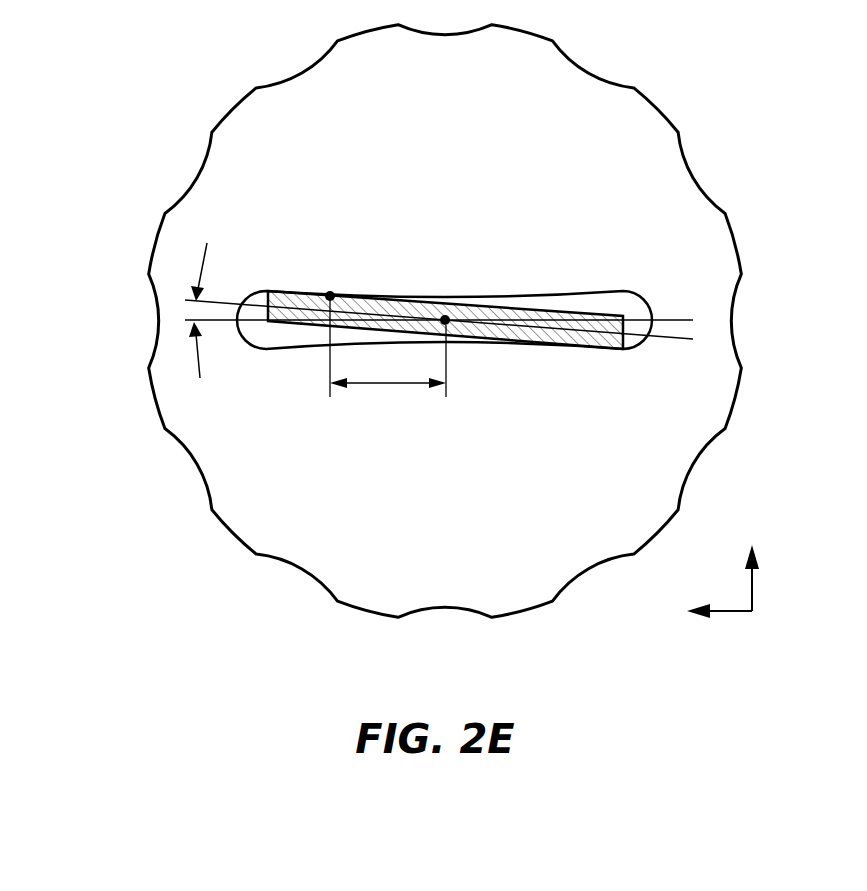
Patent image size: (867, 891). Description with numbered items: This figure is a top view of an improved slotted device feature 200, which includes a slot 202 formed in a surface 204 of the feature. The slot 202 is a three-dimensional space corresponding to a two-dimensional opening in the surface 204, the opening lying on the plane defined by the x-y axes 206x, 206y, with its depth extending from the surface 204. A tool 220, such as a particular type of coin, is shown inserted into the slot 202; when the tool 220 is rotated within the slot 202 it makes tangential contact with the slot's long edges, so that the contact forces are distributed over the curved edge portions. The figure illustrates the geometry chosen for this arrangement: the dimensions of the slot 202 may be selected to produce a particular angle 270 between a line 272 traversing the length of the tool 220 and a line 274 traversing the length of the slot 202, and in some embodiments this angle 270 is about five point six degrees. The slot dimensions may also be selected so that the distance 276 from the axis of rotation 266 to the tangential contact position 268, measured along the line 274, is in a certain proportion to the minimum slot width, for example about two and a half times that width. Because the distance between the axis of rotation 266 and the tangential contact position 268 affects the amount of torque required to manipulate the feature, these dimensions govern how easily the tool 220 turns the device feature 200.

The device feature 200 is at (206, 64).
The slot 202 is at (614, 291).
The surface 204 is at (430, 156).
The x-axis 206x is at (750, 562).
The y-axis 206y is at (687, 613).
The tool 220 is at (538, 310).
The axis of rotation 266 is at (449, 325).
The tangential contact position 268 is at (331, 295).
The angle 270 is at (193, 313).
The line traversing the length of the tool 272 is at (214, 301).
The line traversing the length of the slot 274 is at (213, 322).
The distance 276 is at (388, 348).